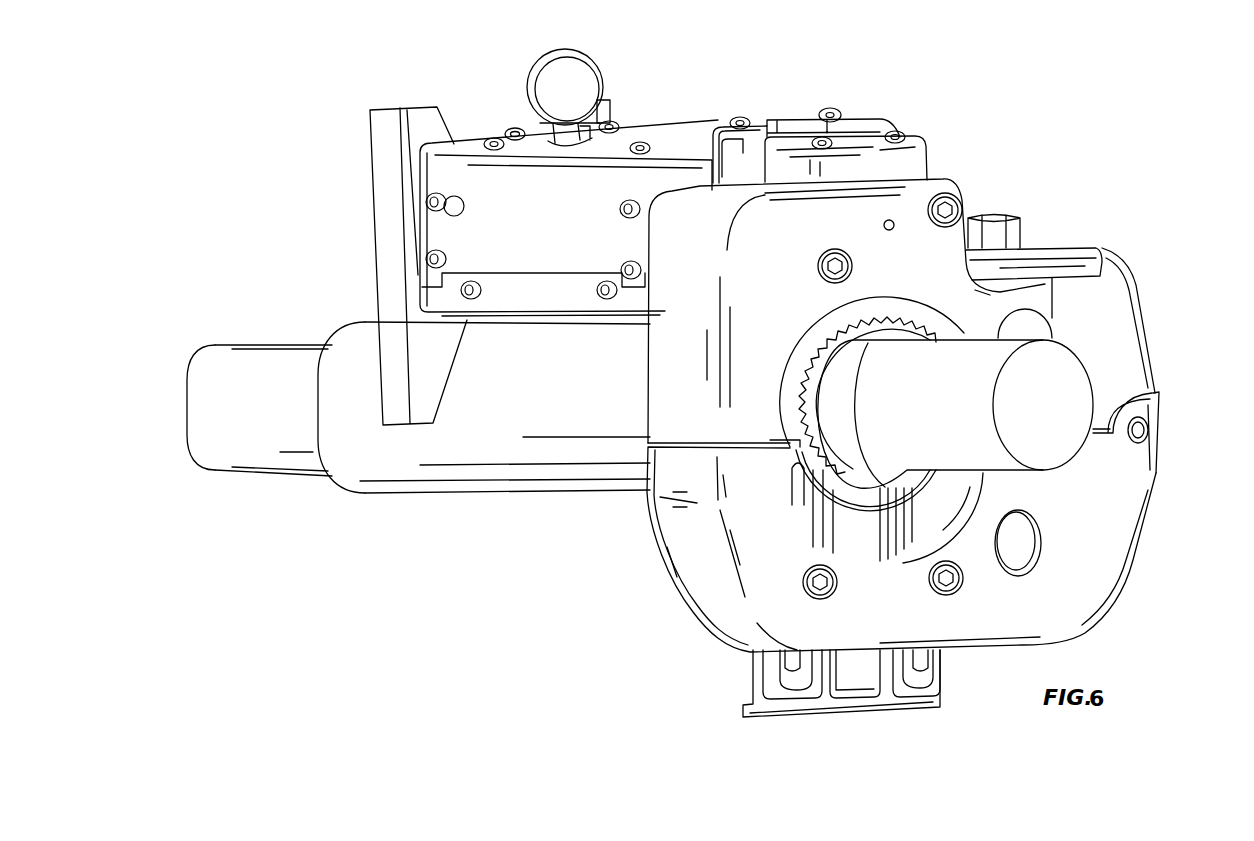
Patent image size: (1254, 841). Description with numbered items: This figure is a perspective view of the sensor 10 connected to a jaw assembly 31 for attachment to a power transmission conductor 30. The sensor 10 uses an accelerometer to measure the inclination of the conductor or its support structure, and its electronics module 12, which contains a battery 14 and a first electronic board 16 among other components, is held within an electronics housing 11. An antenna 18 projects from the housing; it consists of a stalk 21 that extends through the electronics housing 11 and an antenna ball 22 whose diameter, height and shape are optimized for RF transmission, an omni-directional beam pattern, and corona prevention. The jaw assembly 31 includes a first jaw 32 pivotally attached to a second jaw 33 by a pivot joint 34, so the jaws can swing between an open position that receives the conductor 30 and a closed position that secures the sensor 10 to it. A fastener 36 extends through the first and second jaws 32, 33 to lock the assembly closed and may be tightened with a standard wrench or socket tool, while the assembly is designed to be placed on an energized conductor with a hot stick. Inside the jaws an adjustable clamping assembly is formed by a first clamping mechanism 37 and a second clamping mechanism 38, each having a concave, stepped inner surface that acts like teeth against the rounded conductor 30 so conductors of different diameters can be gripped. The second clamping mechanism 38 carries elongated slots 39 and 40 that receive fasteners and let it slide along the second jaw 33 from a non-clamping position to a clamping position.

The sensor 10 is at (987, 100).
The electronics housing 11 is at (682, 140).
The electronics module 12 is at (805, 113).
The battery 14 is at (470, 123).
The first electronic board 16 is at (413, 120).
The antenna 18 is at (580, 43).
The stalk 21 is at (520, 128).
The antenna ball 22 is at (588, 78).
The power transmission conductor 30 is at (278, 340).
The jaw assembly 31 is at (1142, 250).
The first jaw 32 is at (1130, 328).
The second jaw 33 is at (1110, 528).
The pivot joint 34 is at (1150, 430).
The fastener 36 is at (1007, 217).
The first clamping mechanism 37 is at (793, 380).
The second clamping mechanism 38 is at (920, 710).
The elongated slot 39 is at (793, 665).
The elongated slot 40 is at (922, 664).